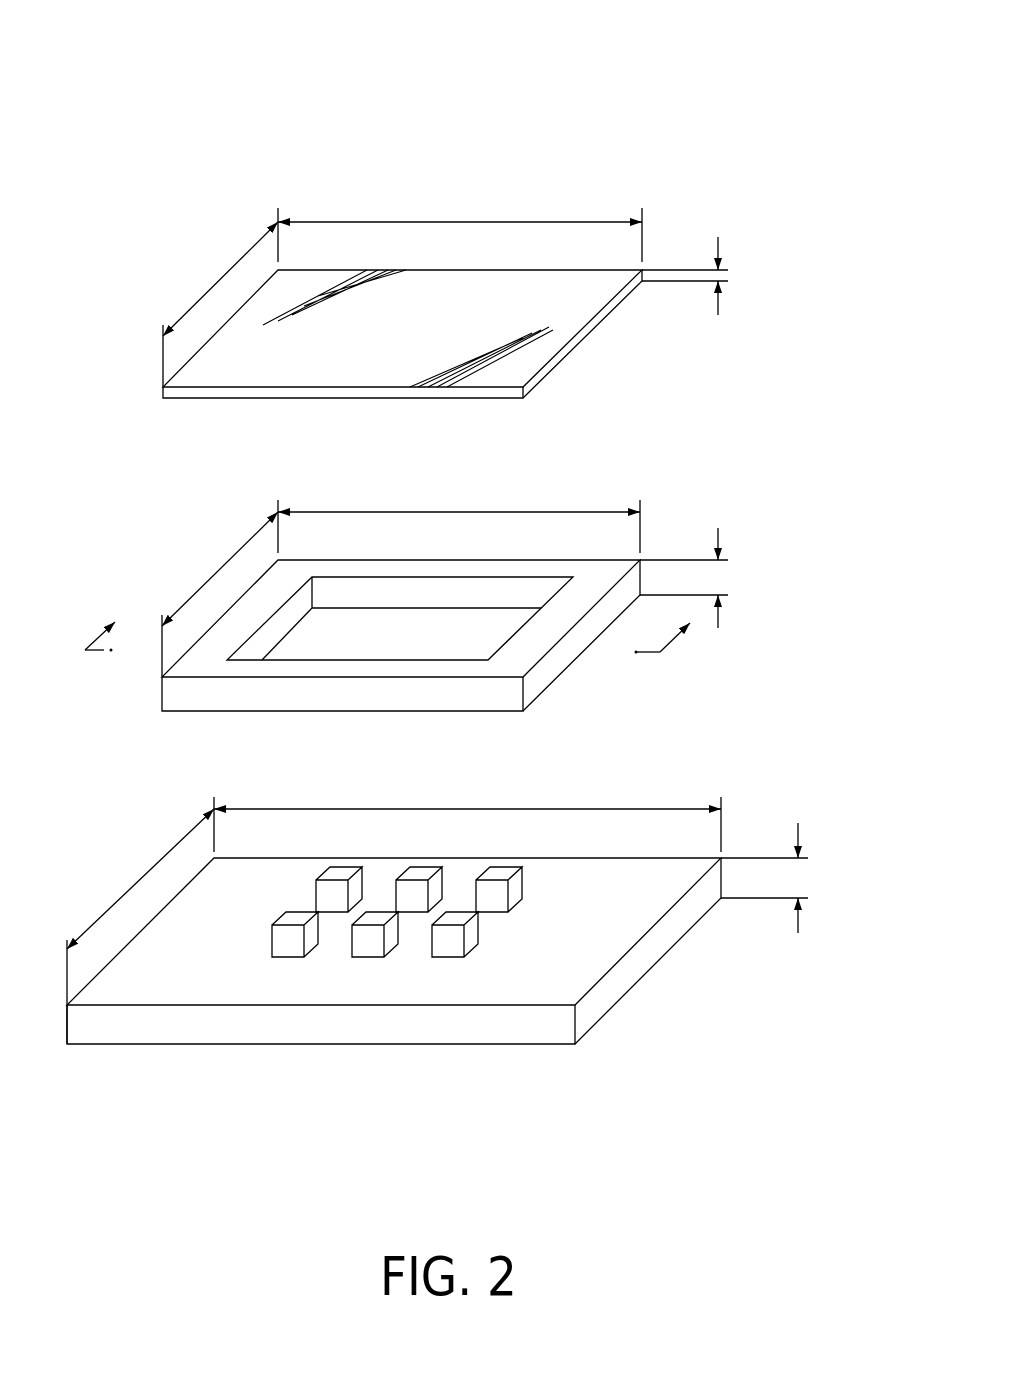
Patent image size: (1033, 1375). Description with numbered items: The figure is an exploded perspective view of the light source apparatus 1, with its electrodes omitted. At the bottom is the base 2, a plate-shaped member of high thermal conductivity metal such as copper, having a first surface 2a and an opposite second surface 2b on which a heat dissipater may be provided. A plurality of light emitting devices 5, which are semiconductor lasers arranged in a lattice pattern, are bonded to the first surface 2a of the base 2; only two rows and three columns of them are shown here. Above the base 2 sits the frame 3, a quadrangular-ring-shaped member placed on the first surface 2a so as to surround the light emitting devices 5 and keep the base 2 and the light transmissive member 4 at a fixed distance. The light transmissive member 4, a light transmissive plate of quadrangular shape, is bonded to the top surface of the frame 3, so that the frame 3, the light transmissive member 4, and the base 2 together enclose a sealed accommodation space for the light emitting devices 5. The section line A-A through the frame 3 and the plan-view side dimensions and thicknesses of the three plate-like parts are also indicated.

The light source apparatus 1 is at (466, 133).
The base 2 is at (590, 1010).
The first surface 2a is at (253, 992).
The second surface 2b is at (333, 1046).
The frame 3 is at (553, 665).
The light transmissive member 4 is at (548, 348).
The light emitting devices 5 is at (518, 892).